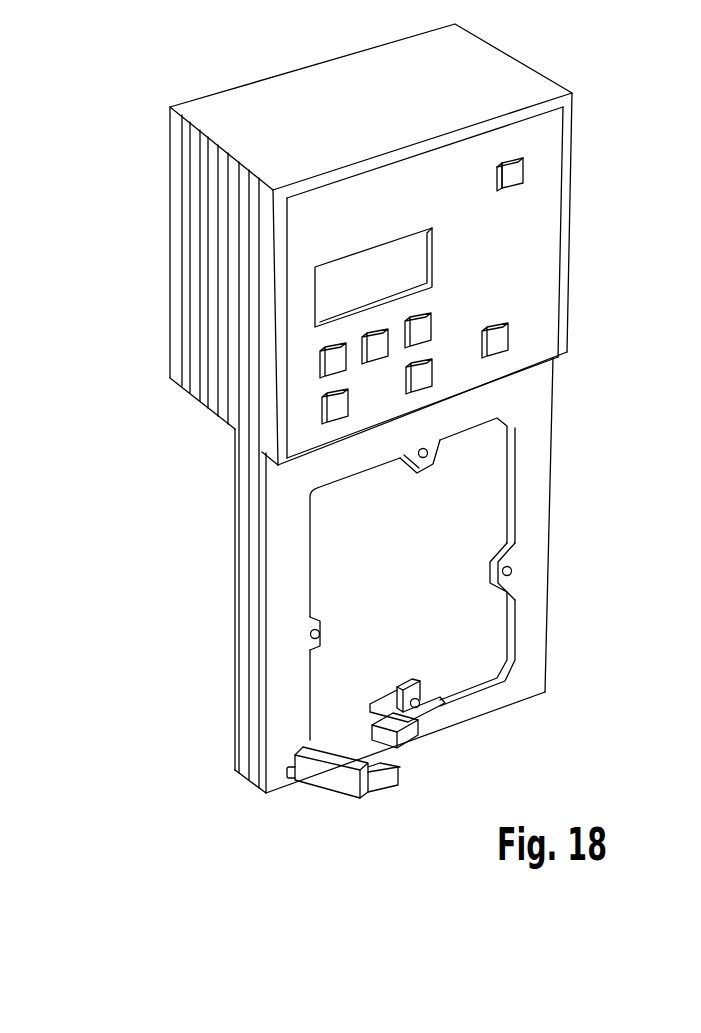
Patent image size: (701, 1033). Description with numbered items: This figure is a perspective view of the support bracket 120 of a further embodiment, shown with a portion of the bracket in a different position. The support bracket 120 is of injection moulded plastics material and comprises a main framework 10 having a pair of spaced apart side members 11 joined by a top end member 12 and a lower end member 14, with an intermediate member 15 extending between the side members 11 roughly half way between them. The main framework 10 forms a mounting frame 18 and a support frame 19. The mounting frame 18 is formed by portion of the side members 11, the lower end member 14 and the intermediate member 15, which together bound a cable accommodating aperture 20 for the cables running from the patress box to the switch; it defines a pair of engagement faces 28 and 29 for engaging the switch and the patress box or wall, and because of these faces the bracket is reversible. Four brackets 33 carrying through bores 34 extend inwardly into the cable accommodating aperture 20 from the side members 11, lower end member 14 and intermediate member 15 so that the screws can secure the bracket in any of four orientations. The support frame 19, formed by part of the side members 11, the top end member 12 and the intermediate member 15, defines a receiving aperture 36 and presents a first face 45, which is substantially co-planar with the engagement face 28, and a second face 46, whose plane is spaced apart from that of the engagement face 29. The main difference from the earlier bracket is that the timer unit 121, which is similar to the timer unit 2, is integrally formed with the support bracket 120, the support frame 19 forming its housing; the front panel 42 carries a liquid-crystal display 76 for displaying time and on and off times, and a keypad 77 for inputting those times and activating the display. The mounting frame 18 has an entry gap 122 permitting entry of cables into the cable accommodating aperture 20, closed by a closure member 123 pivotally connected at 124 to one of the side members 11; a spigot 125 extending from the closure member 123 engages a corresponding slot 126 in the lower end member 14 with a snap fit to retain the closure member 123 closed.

The timer unit 2 is at (542, 197).
The main framework 10 is at (477, 57).
The side members 11 is at (182, 155).
The top end member 12 is at (322, 68).
The lower end member 14 is at (512, 690).
The intermediate member 15 is at (367, 460).
The mounting frame 18 is at (542, 480).
The support frame 19 is at (203, 353).
The cable accommodating aperture 20 is at (310, 536).
The engagement face 28 is at (550, 427).
The engagement face 29 is at (232, 492).
The brackets 33 is at (415, 478).
The through bores 34 is at (430, 455).
The receiving aperture 36 is at (292, 243).
The front panel 42 is at (553, 127).
The first face 45 is at (568, 272).
The second face 46 is at (172, 197).
The liquid-crystal display 76 is at (417, 250).
The keypad 77 is at (465, 302).
The support bracket 120 is at (553, 43).
The timer unit 121 is at (548, 230).
The entry gap 122 is at (370, 707).
The closure member 123 is at (345, 788).
The pivotal connection 124 is at (292, 785).
The spigot 125 is at (400, 790).
The slot 126 is at (417, 733).